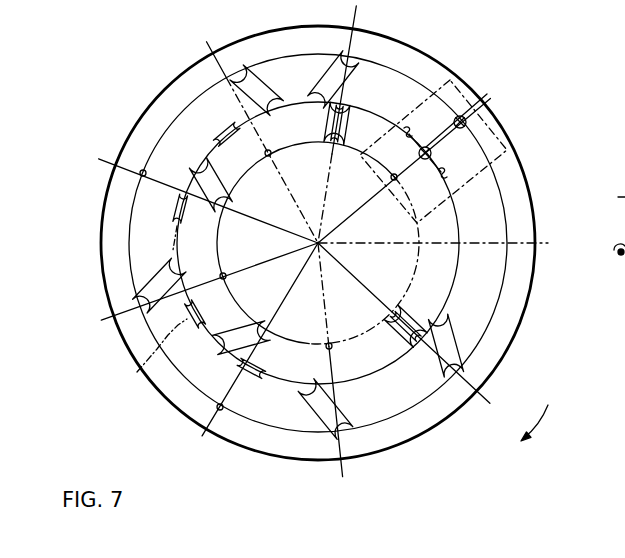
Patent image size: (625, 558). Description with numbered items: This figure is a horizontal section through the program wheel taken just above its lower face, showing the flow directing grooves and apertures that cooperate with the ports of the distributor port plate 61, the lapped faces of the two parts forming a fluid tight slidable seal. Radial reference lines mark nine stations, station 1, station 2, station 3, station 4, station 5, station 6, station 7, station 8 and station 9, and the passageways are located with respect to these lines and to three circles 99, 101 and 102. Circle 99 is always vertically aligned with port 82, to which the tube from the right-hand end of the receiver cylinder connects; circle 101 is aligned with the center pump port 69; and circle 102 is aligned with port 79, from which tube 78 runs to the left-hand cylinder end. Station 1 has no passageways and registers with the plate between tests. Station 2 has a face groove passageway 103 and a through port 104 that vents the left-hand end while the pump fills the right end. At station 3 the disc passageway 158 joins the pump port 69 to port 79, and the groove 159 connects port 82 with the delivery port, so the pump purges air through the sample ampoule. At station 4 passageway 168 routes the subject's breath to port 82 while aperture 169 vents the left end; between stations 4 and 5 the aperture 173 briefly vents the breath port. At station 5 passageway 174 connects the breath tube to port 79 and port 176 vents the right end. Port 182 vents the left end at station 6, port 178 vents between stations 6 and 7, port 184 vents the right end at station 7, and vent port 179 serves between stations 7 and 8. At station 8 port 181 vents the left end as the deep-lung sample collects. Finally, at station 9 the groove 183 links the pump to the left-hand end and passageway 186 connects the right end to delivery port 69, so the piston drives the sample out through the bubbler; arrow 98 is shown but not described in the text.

The station 1 is at (442, 246).
The station 2 is at (411, 163).
The station 3 is at (339, 121).
The station 4 is at (257, 129).
The station 5 is at (202, 194).
The station 6 is at (203, 286).
The station 7 is at (254, 355).
The station 8 is at (336, 370).
The station 9 is at (409, 331).
The port plate 61 is at (453, 80).
The center port 69 is at (433, 157).
The tube 78 is at (609, 196).
The port 79 is at (611, 266).
The port 82 is at (464, 118).
The direction of rotation arrow 98 is at (538, 421).
The circle 99 is at (491, 168).
The circle 101 is at (459, 211).
The circle 102 is at (420, 237).
The face groove passageway 103 is at (464, 124).
The port 104 is at (394, 181).
The disc passageway 158 is at (353, 105).
The disc groove or passageway 159 is at (357, 52).
The program wheel passageway 168 is at (234, 68).
The disc aperture 169 is at (271, 158).
The disc aperture 173 is at (216, 130).
The disc passageway 174 is at (190, 157).
The port 176 is at (140, 174).
The disc port 178 is at (140, 371).
The vent port 179 is at (258, 374).
The port 181 is at (332, 345).
The port 182 is at (226, 278).
The disc passageway or groove 183 is at (428, 355).
The port 184 is at (220, 411).
The passageway 186 is at (463, 355).